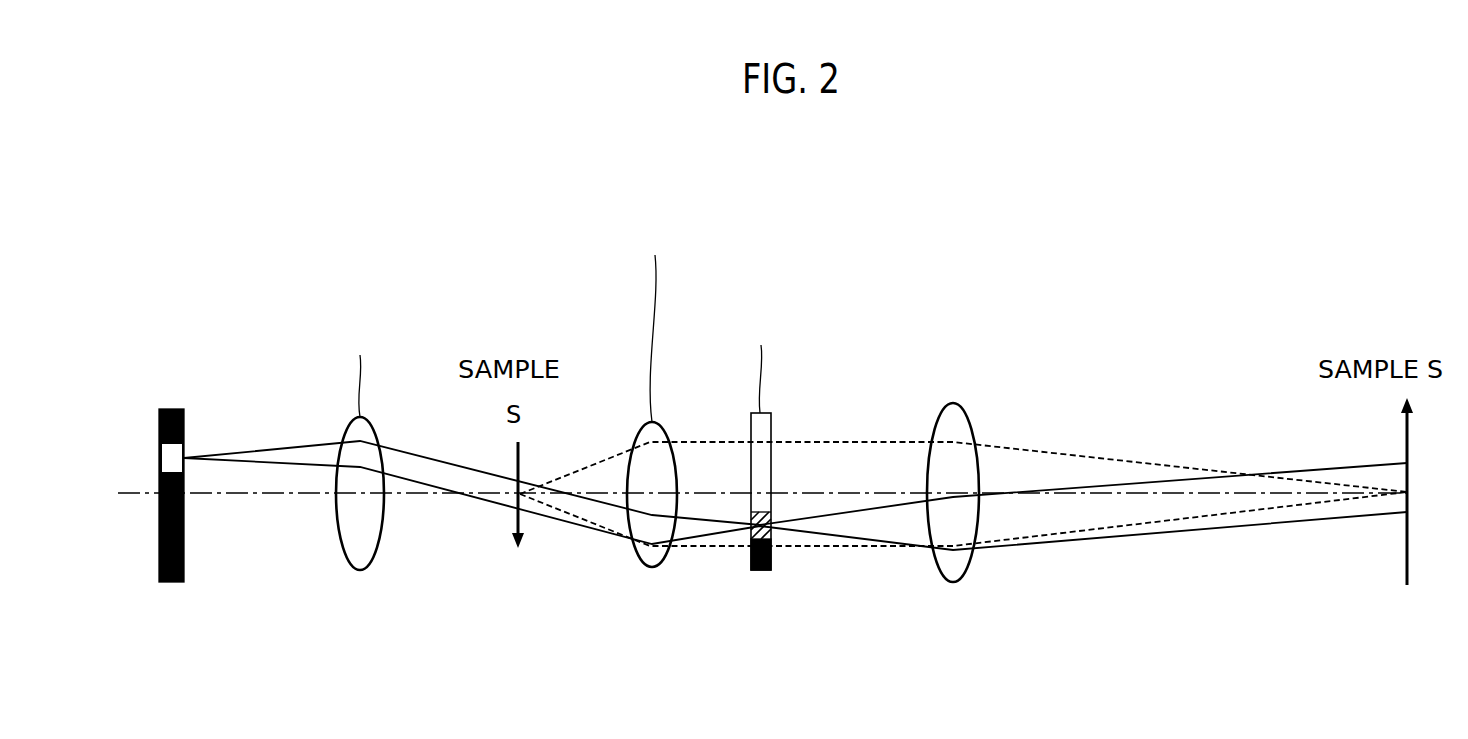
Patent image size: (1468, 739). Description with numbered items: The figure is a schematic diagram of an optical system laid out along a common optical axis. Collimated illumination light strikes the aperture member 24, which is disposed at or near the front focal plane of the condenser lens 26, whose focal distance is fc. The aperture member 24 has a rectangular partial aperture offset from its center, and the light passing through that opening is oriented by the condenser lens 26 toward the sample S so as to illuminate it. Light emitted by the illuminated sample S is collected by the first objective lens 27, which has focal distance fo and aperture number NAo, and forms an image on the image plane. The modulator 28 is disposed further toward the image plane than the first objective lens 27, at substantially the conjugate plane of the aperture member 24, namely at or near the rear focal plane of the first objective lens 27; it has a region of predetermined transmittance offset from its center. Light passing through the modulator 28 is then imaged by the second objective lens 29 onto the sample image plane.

The aperture member 24 is at (172, 582).
The condenser lens 26 is at (360, 570).
The first objective lens 27 is at (652, 567).
The modulator 28 is at (760, 570).
The second objective lens 29 is at (953, 582).